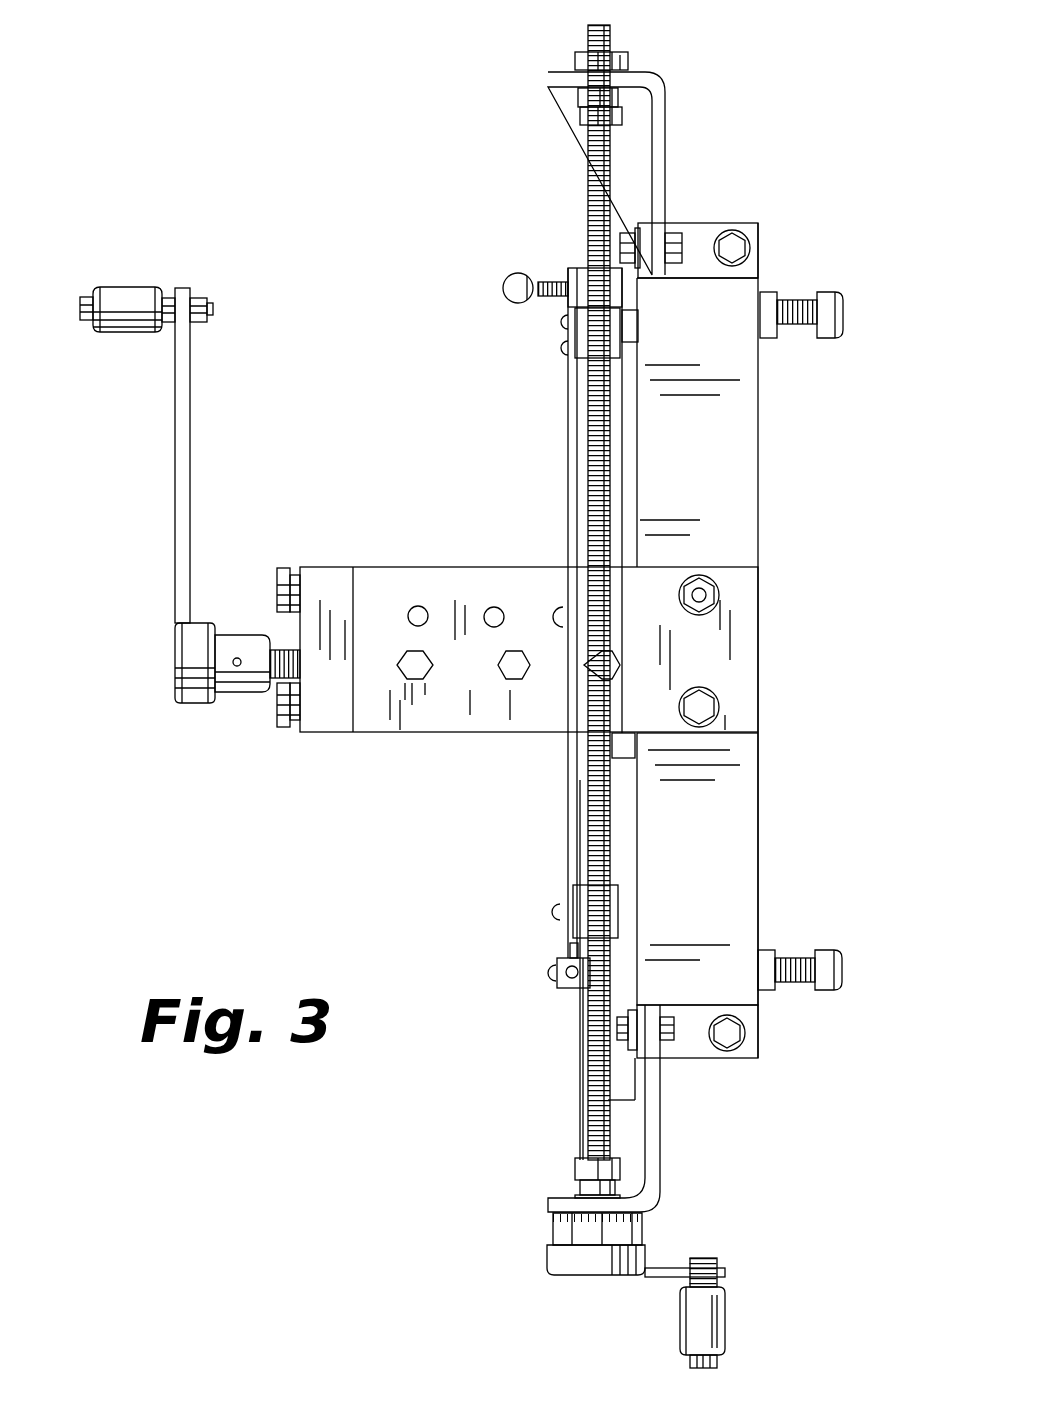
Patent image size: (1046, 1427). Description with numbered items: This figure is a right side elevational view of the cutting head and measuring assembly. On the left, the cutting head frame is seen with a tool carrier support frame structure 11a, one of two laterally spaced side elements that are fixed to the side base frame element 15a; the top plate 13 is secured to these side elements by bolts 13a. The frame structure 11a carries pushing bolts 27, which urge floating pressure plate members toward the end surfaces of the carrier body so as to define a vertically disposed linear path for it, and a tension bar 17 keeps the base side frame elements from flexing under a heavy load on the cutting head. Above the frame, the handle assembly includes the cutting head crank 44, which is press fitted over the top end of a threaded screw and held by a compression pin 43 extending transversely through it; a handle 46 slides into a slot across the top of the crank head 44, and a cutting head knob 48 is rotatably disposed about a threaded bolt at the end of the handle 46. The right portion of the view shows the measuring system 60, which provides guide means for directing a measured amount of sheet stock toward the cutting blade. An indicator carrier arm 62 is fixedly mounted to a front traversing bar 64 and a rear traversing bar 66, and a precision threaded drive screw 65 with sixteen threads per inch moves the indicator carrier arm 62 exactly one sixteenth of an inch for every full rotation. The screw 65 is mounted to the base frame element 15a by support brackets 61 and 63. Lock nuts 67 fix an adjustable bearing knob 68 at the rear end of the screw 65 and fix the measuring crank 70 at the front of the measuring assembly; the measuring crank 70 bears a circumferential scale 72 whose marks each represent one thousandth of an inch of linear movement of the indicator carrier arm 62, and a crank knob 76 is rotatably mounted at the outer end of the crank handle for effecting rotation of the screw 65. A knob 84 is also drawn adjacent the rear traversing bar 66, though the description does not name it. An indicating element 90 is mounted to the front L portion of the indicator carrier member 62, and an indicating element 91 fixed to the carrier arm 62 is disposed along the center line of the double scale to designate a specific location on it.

The tool carrier support frame structure 11a is at (438, 735).
The top plate 13 is at (316, 735).
The bolts 13a is at (286, 585).
The side base frame element 15a is at (748, 750).
The tension bar 17 is at (708, 592).
The pushing bolts 27 is at (412, 658).
The compression pin 43 is at (237, 668).
The cutting head crank 44 is at (178, 668).
The handle 46 is at (180, 420).
The cutting head knob 48 is at (123, 295).
The measuring system 60 is at (560, 812).
The support bracket 61 is at (650, 238).
The indicator carrier arm 62 is at (568, 428).
The support bracket 63 is at (662, 143).
The front traversing bar 64 is at (605, 915).
The precision threaded drive screw 65 is at (597, 475).
The rear traversing bar 66 is at (592, 332).
The lock nuts 67 is at (583, 115).
The adjustable bearing knob 68 is at (600, 97).
The measuring crank 70 is at (532, 1272).
The circumferential scale 72 is at (553, 1230).
The crank knob 76 is at (718, 1326).
The locking knob 84 is at (523, 290).
The indicating element 90 is at (567, 970).
The indicating element 91 is at (571, 948).